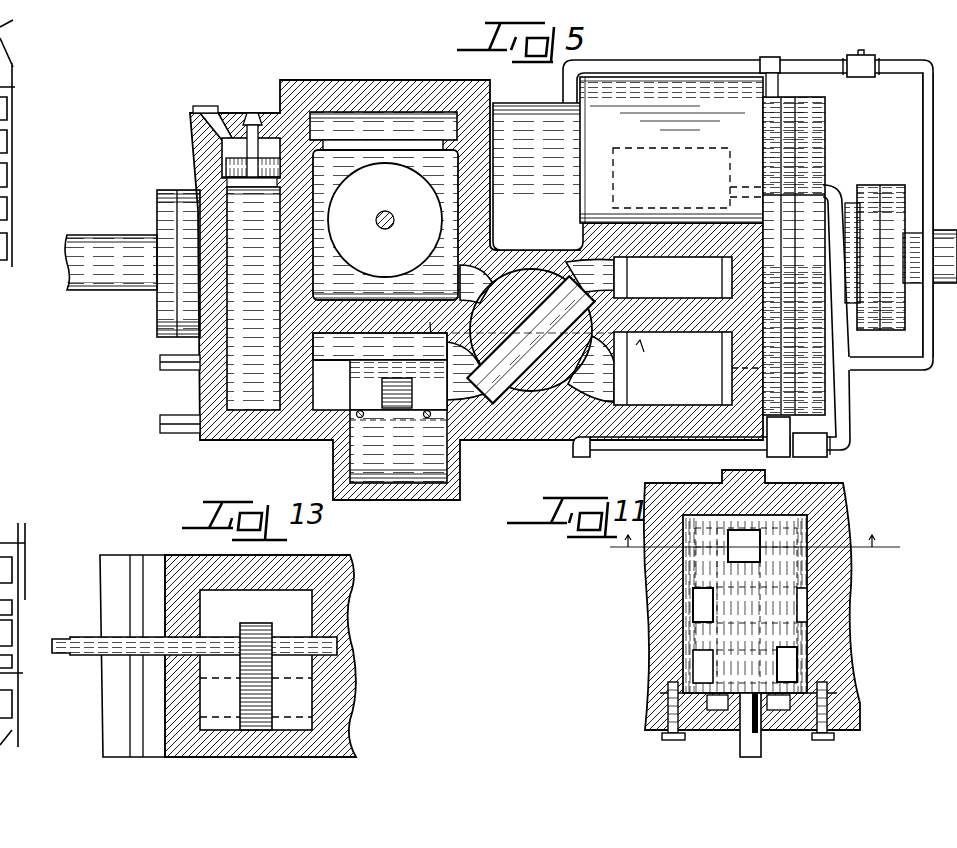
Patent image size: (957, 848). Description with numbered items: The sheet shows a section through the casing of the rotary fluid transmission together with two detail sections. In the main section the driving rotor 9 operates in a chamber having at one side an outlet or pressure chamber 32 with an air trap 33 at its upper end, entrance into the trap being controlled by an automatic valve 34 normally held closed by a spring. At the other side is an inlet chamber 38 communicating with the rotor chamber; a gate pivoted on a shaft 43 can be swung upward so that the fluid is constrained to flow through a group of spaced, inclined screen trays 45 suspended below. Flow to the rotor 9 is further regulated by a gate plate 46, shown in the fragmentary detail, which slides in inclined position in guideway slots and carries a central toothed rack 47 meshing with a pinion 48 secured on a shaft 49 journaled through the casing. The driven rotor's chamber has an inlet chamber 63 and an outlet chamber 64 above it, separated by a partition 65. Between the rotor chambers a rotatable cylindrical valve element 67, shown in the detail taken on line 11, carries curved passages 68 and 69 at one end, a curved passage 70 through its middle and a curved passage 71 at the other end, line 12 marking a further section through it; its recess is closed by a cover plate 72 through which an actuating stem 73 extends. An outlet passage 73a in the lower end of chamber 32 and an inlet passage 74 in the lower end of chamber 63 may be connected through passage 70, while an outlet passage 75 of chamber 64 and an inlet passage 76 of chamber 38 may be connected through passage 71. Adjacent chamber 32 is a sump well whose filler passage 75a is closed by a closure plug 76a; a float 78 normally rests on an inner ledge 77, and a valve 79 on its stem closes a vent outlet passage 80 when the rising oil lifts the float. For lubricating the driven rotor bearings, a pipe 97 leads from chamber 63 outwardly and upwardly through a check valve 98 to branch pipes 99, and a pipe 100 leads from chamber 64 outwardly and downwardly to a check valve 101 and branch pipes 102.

In FIG. 5, the rotor 9 is at (927, 203).
In FIG. 5, the section line 11 is at (536, 344).
In FIG. 11, the section line 12 is at (752, 546).
In FIG. 5, the outlet or pressure chamber 32 is at (385, 225).
In FIG. 5, the air trap 33 is at (383, 131).
In FIG. 5, the automatic valve 34 is at (385, 220).
In FIG. 5, the inlet chamber 38 is at (380, 355).
In FIG. 5, the shaft 43 is at (175, 433).
In FIG. 5, the screen trays 45 is at (405, 450).
In FIG. 5, the gate plate 46 is at (352, 392).
In FIG. 13, the gate plate 46 is at (305, 672).
In FIG. 5, the toothed rack 47 is at (405, 414).
In FIG. 13, the toothed rack 47 is at (262, 703).
In FIG. 13, the pinion 48 is at (272, 631).
In FIG. 5, the shaft 49 is at (160, 362).
In FIG. 13, the shaft 49 is at (316, 652).
In FIG. 5, the inlet chamber 63 is at (688, 368).
In FIG. 5, the outlet chamber 64 is at (673, 277).
In FIG. 5, the partition 65 is at (702, 352).
In FIG. 5, the rotatable cylindrical valve element 67 is at (540, 385).
In FIG. 11, the rotatable cylindrical valve element 67 is at (790, 575).
In FIG. 11, the curved passage 68 is at (745, 548).
In FIG. 11, the curved passage 69 is at (693, 556).
In FIG. 11, the curved passage 70 is at (697, 605).
In FIG. 5, the curved passage 71 is at (518, 385).
In FIG. 11, the curved passage 71 is at (785, 668).
In FIG. 11, the cover plate 72 is at (722, 724).
In FIG. 11, the actuating stem 73 is at (763, 748).
In FIG. 5, the outlet passage 73a is at (483, 280).
In FIG. 5, the inlet passage 74 is at (612, 389).
In FIG. 5, the outlet passage 75 is at (612, 274).
In FIG. 5, the filler or entrance passage 75a is at (214, 130).
In FIG. 5, the inlet passage 76 is at (447, 393).
In FIG. 5, the closure plug 76a is at (226, 96).
In FIG. 5, the inner ledge 77 is at (226, 182).
In FIG. 5, the float 78 is at (263, 187).
In FIG. 5, the valve 79 is at (283, 97).
In FIG. 5, the vent outlet passage 80 is at (252, 113).
In FIG. 5, the pipe 97 is at (690, 60).
In FIG. 5, the check valve 98 is at (860, 77).
In FIG. 5, the branch pipes 99 is at (563, 88).
In FIG. 5, the pipe 100 is at (805, 192).
In FIG. 5, the check valve 101 is at (820, 452).
In FIG. 5, the branch pipes 102 is at (578, 457).